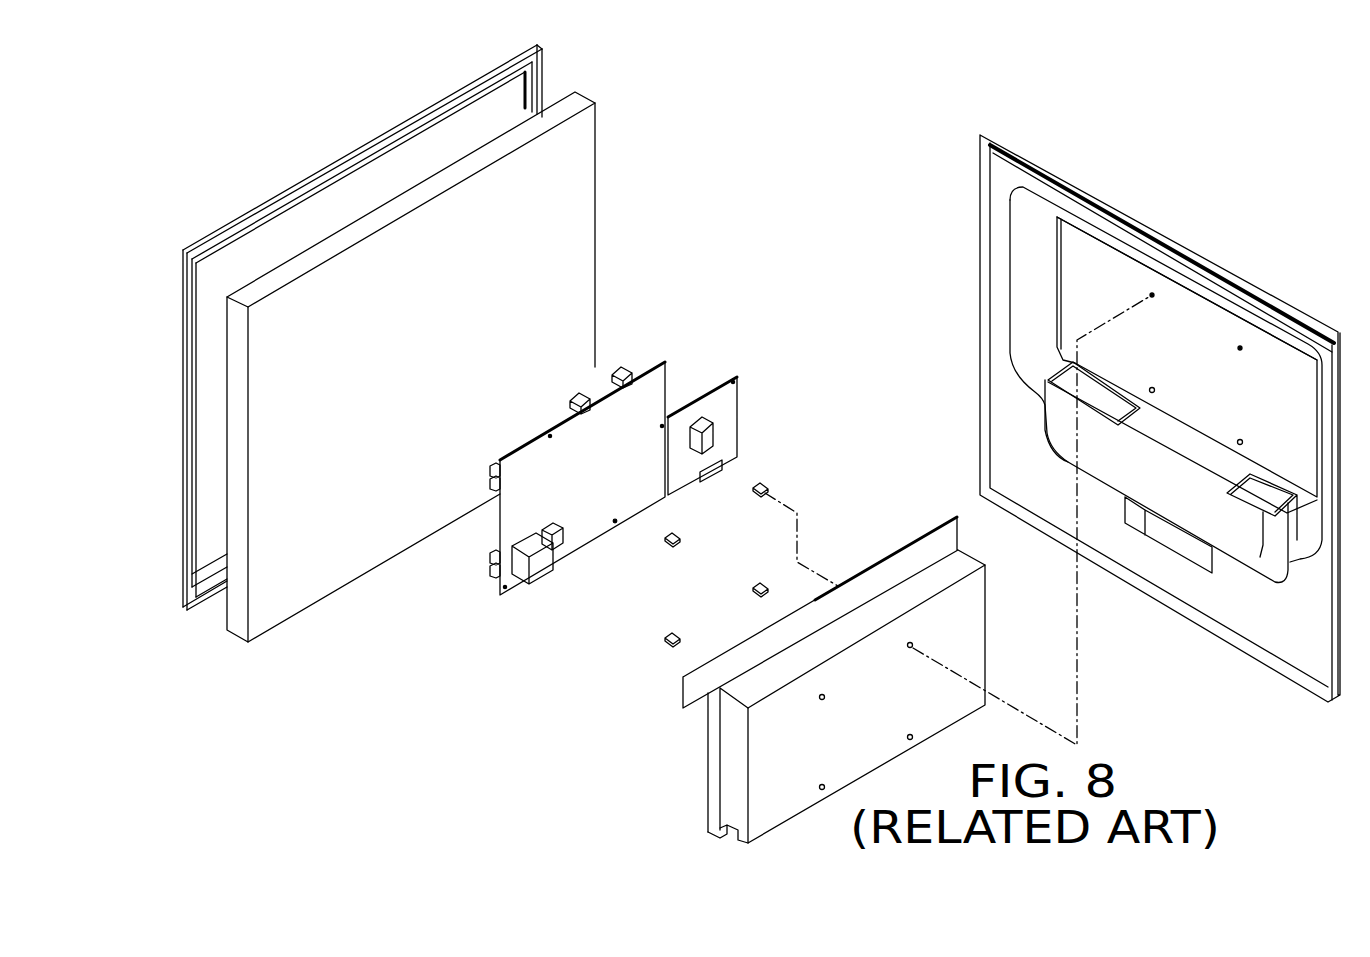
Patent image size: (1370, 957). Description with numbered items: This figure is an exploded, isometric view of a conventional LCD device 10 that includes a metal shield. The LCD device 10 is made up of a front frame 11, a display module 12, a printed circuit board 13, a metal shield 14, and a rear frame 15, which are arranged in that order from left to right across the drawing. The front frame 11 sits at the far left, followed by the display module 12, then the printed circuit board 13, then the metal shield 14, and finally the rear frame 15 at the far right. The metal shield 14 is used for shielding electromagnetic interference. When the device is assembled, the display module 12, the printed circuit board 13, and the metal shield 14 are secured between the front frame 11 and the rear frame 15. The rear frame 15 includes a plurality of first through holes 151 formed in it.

The LCD device 10 is at (734, 95).
The front frame 11 is at (527, 68).
The display module 12 is at (578, 138).
The printed circuit board 13 is at (727, 420).
The metal shield 14 is at (720, 852).
The rear frame 15 is at (1187, 225).
The first through holes 151 is at (1241, 347).